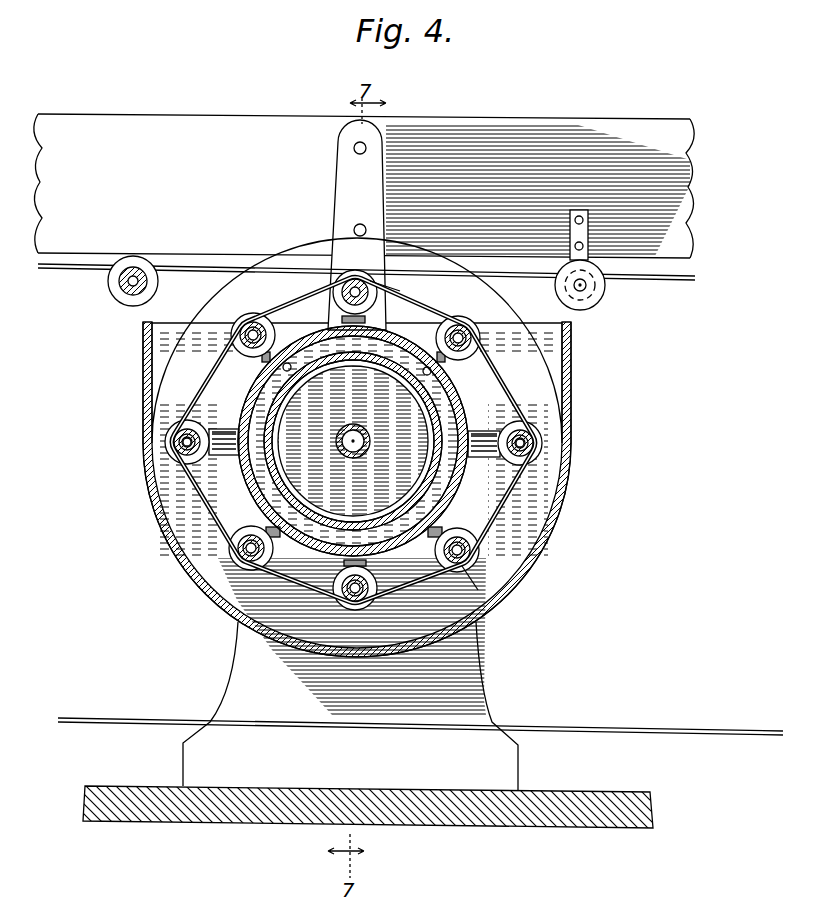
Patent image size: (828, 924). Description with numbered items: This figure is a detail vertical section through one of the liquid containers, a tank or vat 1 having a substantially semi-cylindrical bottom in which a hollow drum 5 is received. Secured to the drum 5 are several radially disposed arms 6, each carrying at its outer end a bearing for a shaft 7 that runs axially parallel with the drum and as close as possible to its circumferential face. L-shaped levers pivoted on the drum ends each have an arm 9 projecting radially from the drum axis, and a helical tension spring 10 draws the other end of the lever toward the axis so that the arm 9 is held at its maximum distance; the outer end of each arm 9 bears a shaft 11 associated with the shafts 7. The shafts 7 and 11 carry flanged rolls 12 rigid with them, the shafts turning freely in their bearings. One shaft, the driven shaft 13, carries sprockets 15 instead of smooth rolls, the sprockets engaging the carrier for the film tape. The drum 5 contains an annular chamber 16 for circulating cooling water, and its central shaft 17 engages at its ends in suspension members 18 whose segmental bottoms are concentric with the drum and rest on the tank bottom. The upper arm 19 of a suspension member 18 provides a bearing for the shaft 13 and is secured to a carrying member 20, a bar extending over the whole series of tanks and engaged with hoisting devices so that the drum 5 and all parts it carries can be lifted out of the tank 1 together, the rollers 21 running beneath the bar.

The tank or vat 1 is at (557, 504).
The hollow drum 5 is at (353, 441).
The radially disposed arm 6 is at (482, 503).
The shaft 7 is at (254, 326).
The arm of lever 9 is at (226, 445).
The helical tension spring 10 is at (353, 441).
The shaft 11 is at (173, 447).
The flanged roll 12 is at (536, 427).
The driven shaft 13 is at (313, 285).
The sprocket 15 is at (409, 293).
The annular chamber 16 is at (464, 397).
The central shaft 17 is at (352, 458).
The suspension member 18 is at (476, 589).
The upper arm 19 is at (340, 222).
The carrying member 20 is at (268, 130).
The roller 21 is at (120, 300).